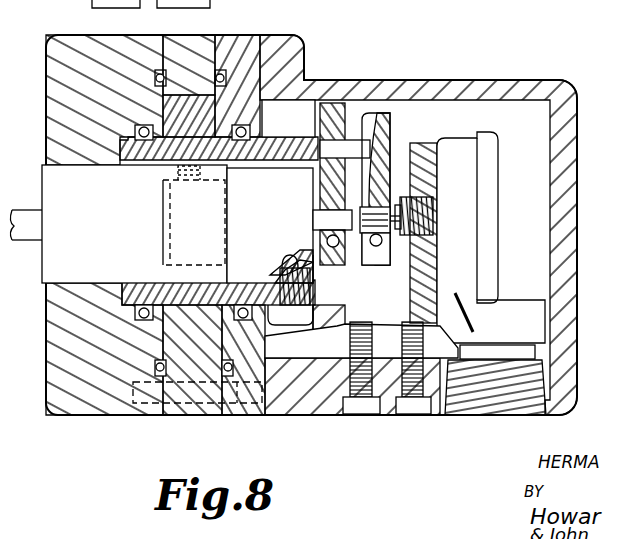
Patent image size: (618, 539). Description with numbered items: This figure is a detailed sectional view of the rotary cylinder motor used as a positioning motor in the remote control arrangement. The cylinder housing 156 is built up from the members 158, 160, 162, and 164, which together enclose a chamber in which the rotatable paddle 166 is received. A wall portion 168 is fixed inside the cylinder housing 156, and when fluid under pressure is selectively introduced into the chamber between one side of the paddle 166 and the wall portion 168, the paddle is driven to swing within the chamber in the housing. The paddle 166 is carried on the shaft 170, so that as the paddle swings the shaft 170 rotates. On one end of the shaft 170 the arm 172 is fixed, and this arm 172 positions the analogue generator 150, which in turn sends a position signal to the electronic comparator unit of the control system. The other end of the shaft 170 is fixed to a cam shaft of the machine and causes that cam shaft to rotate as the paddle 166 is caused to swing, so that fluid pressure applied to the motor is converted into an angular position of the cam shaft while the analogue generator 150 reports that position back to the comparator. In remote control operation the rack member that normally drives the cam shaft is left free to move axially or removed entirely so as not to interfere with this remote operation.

The analogue generator 150 is at (475, 214).
The cylinder housing 156 is at (255, 30).
The housing member 158 is at (112, 91).
The housing member 160 is at (204, 68).
The housing member 162 is at (254, 65).
The housing member 164 is at (298, 82).
The rotatable paddle 166 is at (205, 148).
The wall portion 168 is at (209, 338).
The shaft 170 is at (274, 226).
The arm 172 is at (316, 114).